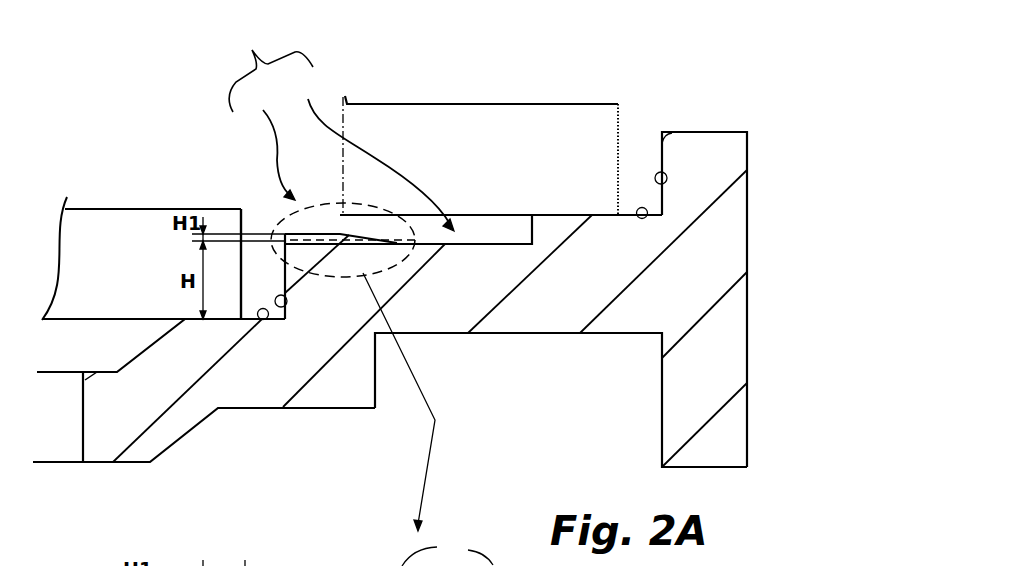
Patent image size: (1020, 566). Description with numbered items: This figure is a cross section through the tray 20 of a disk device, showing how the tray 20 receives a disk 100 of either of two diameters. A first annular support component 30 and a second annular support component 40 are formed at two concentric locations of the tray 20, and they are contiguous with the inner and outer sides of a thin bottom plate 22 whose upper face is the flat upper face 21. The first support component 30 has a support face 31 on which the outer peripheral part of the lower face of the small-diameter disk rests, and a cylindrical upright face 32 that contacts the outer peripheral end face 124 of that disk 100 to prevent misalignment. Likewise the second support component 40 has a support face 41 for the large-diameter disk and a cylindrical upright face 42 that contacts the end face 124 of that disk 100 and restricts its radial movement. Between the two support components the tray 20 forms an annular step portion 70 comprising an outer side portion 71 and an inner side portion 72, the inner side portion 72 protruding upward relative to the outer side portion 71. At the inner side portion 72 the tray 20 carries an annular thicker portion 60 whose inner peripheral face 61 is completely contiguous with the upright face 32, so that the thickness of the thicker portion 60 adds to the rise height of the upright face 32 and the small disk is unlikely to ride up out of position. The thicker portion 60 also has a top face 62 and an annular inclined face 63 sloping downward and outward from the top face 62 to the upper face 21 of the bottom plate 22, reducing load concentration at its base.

The tray 20 is at (130, 467).
The flat upper face 21 is at (477, 243).
The bottom plate 22 is at (451, 334).
The first annular support component 30 is at (252, 273).
The support face 31 is at (265, 320).
The cylindrical upright face 32 is at (288, 301).
The second annular support component 40 is at (643, 144).
The support face 41 is at (642, 219).
The cylindrical upright face 42 is at (667, 178).
The thicker portion 60 is at (312, 233).
The inner peripheral face 61 is at (205, 552).
The top face 62 is at (245, 552).
The annular inclined face 63 is at (357, 556).
The step portion 70 is at (271, 68).
The outer side portion 71 is at (372, 154).
The inner side portion 72 is at (268, 144).
The disk 100 is at (138, 209).
The outer peripheral end face 124 is at (240, 210).